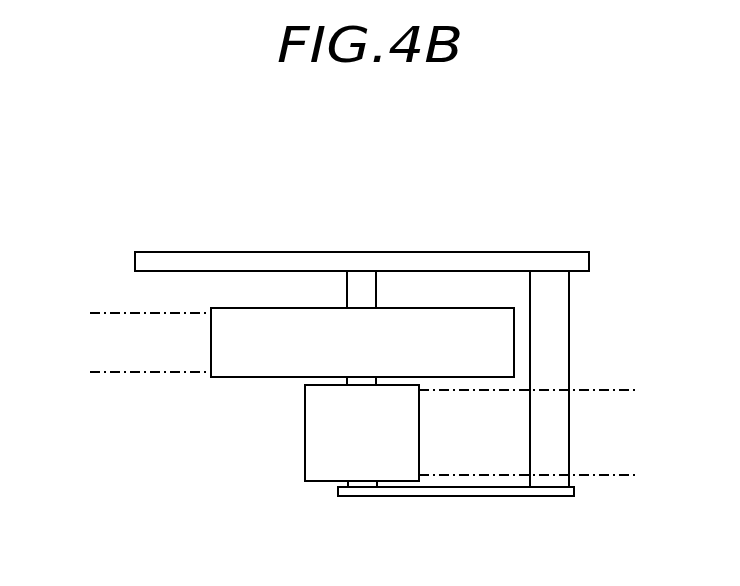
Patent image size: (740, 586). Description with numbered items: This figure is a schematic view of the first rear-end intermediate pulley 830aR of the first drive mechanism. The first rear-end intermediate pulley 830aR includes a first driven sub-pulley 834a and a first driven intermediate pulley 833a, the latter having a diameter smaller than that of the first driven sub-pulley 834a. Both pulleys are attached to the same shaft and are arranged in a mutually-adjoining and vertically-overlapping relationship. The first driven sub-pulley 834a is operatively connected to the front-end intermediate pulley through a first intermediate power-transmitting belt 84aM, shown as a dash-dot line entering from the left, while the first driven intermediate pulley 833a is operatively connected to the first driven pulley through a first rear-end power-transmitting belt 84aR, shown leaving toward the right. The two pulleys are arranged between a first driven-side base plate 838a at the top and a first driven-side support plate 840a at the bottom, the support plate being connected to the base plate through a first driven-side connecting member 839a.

The first rear-end intermediate pulley 830aR is at (361, 206).
The first driven-side base plate 838a is at (483, 252).
The first driven-side connecting member 839a is at (570, 352).
The first driven sub-pulley 834a is at (252, 378).
The first driven intermediate pulley 833a is at (305, 433).
The first driven-side support plate 840a is at (450, 496).
The first intermediate power-transmitting belt 84aM is at (103, 313).
The first rear-end power-transmitting belt 84aR is at (605, 476).